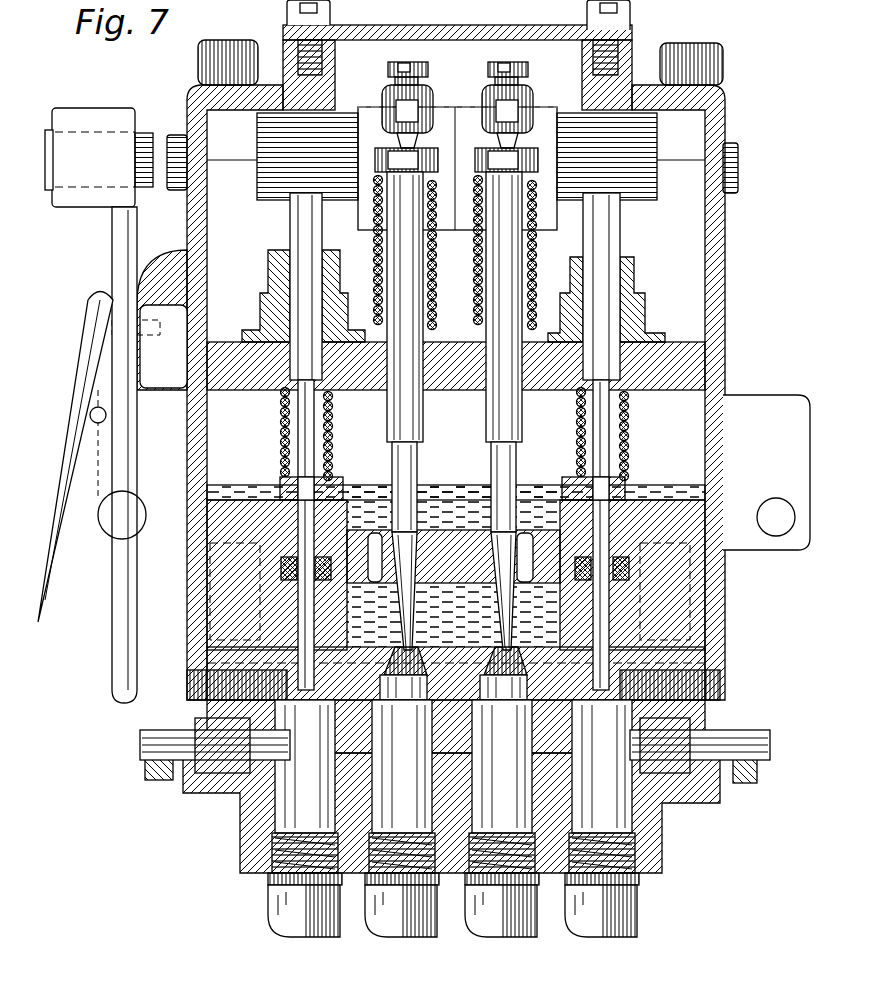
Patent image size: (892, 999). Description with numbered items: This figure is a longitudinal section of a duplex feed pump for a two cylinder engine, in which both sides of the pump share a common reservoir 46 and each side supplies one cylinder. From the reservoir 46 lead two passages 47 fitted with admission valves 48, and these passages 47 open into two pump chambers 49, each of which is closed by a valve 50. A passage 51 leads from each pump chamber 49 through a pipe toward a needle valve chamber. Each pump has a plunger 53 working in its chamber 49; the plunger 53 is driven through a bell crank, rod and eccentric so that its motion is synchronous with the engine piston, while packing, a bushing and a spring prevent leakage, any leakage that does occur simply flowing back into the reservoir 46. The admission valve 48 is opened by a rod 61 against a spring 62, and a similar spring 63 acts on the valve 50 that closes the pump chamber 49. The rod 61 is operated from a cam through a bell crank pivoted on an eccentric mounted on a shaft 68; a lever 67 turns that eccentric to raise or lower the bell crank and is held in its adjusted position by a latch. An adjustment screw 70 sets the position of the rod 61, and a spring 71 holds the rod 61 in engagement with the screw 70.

The reservoir 46 is at (461, 350).
The passage 47 is at (483, 657).
The admission valve 48 is at (397, 690).
The pump chamber 49 is at (598, 722).
The valve 50 is at (242, 818).
The passage 51 is at (140, 745).
The plunger 53 is at (302, 247).
The rod 61 is at (503, 425).
The spring 62 is at (507, 840).
The spring 63 is at (243, 855).
The lever 67 is at (117, 605).
The shaft 68 is at (172, 135).
The adjustment screw 70 is at (487, 70).
The spring 71 is at (462, 294).